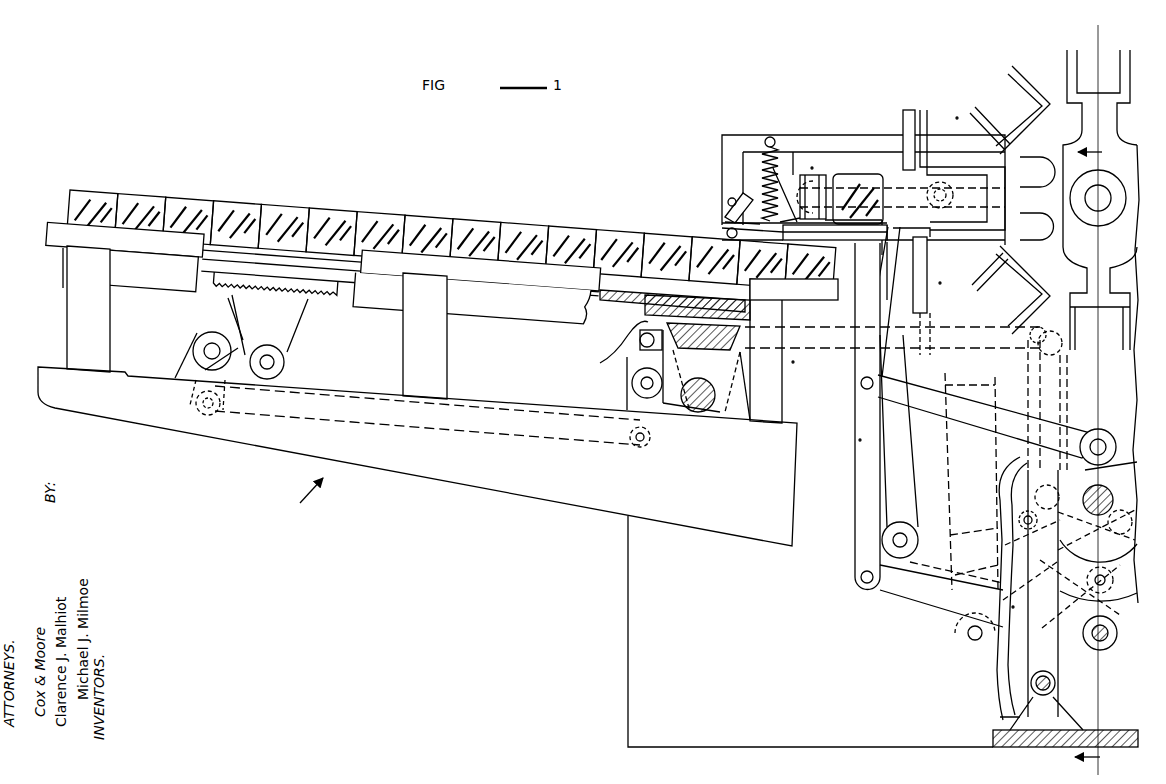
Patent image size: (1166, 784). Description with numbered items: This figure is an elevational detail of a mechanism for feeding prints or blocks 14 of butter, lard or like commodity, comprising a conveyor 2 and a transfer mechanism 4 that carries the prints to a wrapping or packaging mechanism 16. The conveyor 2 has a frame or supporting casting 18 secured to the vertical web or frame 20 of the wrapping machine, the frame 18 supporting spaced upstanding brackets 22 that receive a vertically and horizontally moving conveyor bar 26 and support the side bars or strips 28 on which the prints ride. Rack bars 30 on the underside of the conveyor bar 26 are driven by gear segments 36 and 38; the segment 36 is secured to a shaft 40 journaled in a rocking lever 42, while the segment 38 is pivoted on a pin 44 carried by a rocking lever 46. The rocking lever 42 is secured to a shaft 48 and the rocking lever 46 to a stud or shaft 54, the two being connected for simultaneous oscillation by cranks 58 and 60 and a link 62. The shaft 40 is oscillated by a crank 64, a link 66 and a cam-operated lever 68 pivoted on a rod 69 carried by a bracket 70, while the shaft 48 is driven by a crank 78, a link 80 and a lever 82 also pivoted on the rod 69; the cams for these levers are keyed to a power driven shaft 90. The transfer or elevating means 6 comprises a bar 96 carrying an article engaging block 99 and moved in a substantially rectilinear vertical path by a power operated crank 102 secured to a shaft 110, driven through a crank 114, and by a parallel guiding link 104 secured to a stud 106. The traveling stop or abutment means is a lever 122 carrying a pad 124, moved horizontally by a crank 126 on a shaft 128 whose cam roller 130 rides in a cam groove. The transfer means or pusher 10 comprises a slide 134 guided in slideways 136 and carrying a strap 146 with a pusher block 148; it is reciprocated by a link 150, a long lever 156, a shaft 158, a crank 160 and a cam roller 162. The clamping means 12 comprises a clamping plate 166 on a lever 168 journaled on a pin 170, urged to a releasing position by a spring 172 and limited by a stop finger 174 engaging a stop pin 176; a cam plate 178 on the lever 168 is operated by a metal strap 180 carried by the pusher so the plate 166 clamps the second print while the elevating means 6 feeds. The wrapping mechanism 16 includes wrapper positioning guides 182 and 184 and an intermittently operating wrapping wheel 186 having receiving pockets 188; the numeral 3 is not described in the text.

The conveyor 2 is at (303, 502).
The section line arrow 3 is at (940, 283).
The transfer mechanism 4 is at (782, 125).
The transfer or elevating means 6 is at (845, 300).
The transfer means or pusher 10 is at (814, 166).
The clamping means 12 is at (794, 212).
The prints or blocks 14 is at (378, 216).
The wrapping or packaging mechanism 16 is at (957, 117).
The frame or supporting casting 18 is at (220, 430).
The vertical web or frame 20 is at (627, 681).
The upstanding brackets 22 is at (67, 318).
The conveyor bar 26 is at (512, 307).
The side bars or strips 28 is at (533, 275).
The rack bars 30 is at (322, 297).
The gear segment 36 is at (697, 353).
The gear segment 38 is at (288, 330).
The shaft 40 is at (700, 410).
The rocking lever 42 is at (665, 397).
The pin 44 is at (274, 364).
The rocking lever 46 is at (236, 330).
The shaft 48 is at (632, 383).
The stud or shaft 54 is at (205, 350).
The crank 58 is at (636, 445).
The crank 60 is at (196, 398).
The link 62 is at (456, 428).
The crank 64 is at (728, 412).
The link 66 is at (793, 362).
The lever or crank 68 is at (1036, 380).
The rod 69 is at (1052, 683).
The bracket 70 is at (1012, 720).
The crank 78 is at (622, 362).
The link 80 is at (853, 416).
The crank or lever 82 is at (1060, 374).
The power driven shaft 90 is at (1108, 497).
The bar 96 is at (860, 440).
The article engaging block 99 is at (835, 300).
The power operated lever or crank 102 is at (913, 597).
The guiding link or lever 104 is at (982, 410).
The stud 106 is at (1102, 445).
The shaft 110 is at (1105, 643).
The crank 114 is at (1105, 614).
The bar or lever 122 is at (900, 450).
The pad or block 124 is at (888, 266).
The lever or crank 126 is at (978, 538).
The shaft 128 is at (906, 542).
The cam roller 130 is at (1112, 580).
The slide or reciprocating means 134 is at (793, 160).
The slideways 136 is at (876, 142).
The bar or strap 146 is at (808, 172).
The pusher block 148 is at (823, 172).
The link or lever 150 is at (890, 195).
The long lever 156 is at (975, 462).
The shaft 158 is at (970, 645).
The crank 160 is at (1013, 607).
The cam roller 162 is at (1108, 521).
The clamping plate or bar 166 is at (830, 236).
The flat bar or lever 168 is at (722, 224).
The pin 170 is at (726, 233).
The spring 172 is at (768, 142).
The stop finger 174 is at (722, 213).
The stop pin 176 is at (718, 200).
The cam plate or block 178 is at (722, 170).
The metal strap 180 is at (835, 232).
The wrapper positioning guides 182 is at (924, 118).
The wrapper positioning guides 184 is at (929, 345).
The wrapping wheel 186 is at (1065, 150).
The receiving pockets 188 is at (1007, 113).